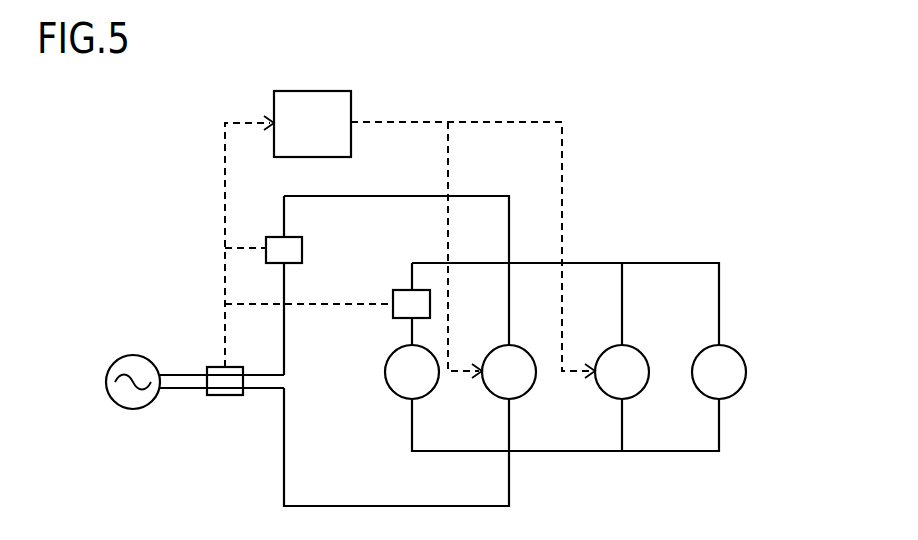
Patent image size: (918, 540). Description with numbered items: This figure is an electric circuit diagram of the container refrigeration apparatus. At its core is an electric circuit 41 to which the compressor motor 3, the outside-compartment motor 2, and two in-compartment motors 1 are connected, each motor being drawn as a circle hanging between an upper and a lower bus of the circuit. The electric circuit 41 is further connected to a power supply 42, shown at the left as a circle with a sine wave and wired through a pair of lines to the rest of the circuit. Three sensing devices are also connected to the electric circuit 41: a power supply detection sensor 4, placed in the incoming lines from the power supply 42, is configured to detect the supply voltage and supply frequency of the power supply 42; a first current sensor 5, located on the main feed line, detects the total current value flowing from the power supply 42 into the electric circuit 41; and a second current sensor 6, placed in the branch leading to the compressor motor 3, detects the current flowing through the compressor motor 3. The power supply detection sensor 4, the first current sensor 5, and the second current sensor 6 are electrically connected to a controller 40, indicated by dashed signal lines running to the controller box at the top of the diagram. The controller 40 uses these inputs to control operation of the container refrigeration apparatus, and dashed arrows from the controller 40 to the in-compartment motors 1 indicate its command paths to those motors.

The in-compartment motor 1 is at (497, 398).
The outside-compartment motor 2 is at (706, 398).
The compressor motor 3 is at (404, 398).
The power supply detection sensor 4 is at (223, 395).
The first current sensor 5 is at (302, 246).
The second current sensor 6 is at (393, 310).
The controller 40 is at (351, 105).
The electric circuit 41 is at (598, 155).
The power supply 42 is at (136, 355).